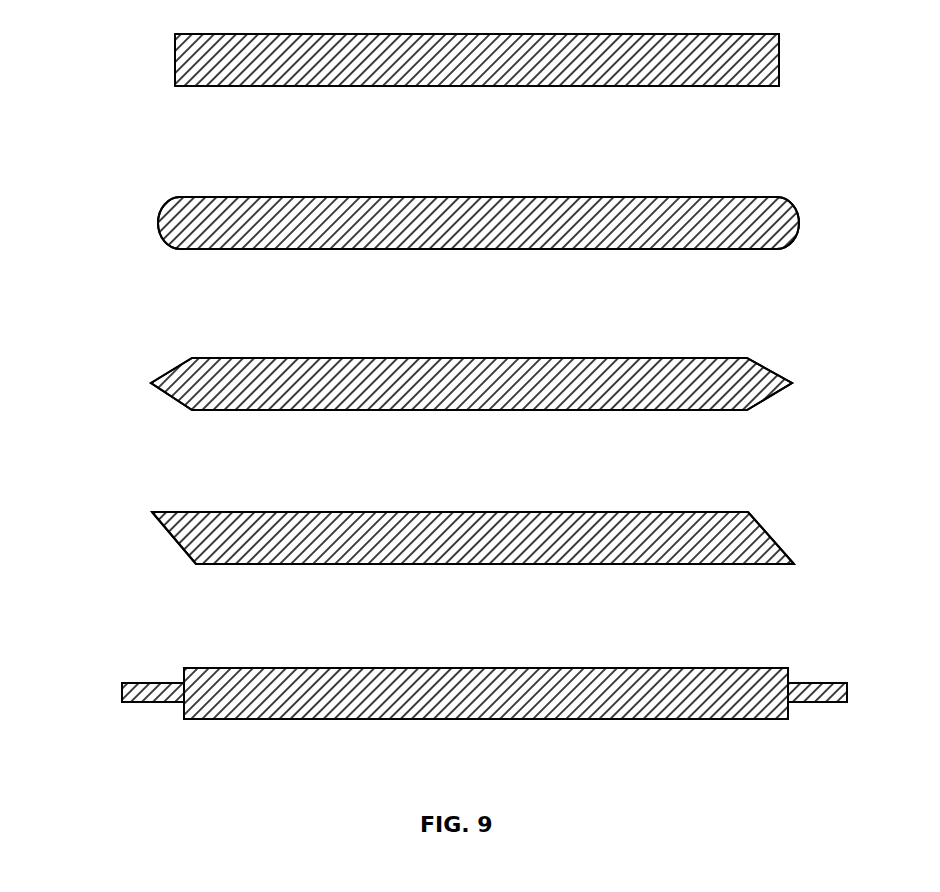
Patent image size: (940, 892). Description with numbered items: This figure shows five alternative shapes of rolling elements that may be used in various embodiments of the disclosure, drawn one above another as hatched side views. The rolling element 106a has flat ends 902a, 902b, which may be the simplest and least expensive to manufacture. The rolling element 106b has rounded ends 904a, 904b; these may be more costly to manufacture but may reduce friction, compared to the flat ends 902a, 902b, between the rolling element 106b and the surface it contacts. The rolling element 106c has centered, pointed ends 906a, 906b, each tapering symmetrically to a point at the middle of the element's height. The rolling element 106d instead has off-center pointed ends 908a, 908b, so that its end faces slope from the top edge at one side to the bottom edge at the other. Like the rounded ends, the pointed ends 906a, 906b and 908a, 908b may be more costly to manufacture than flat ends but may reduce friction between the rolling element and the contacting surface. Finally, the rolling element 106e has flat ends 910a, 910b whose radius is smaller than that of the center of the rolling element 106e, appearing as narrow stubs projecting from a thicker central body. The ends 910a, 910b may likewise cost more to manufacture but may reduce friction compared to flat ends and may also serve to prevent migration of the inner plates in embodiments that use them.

The rolling element 106a is at (243, 34).
The flat end 902a is at (175, 69).
The flat end 902b is at (779, 69).
The rolling element 106b is at (243, 197).
The rounded end 904a is at (159, 223).
The rounded end 904b is at (798, 222).
The rolling element 106c is at (244, 358).
The centered pointed end 906a is at (151, 383).
The centered pointed end 906b is at (792, 383).
The rolling element 106d is at (246, 512).
The off-center pointed end 908a is at (152, 512).
The off-center pointed end 908b is at (794, 564).
The rolling element 106e is at (258, 668).
The reduced-radius flat end 910a is at (122, 683).
The reduced-radius flat end 910b is at (847, 694).